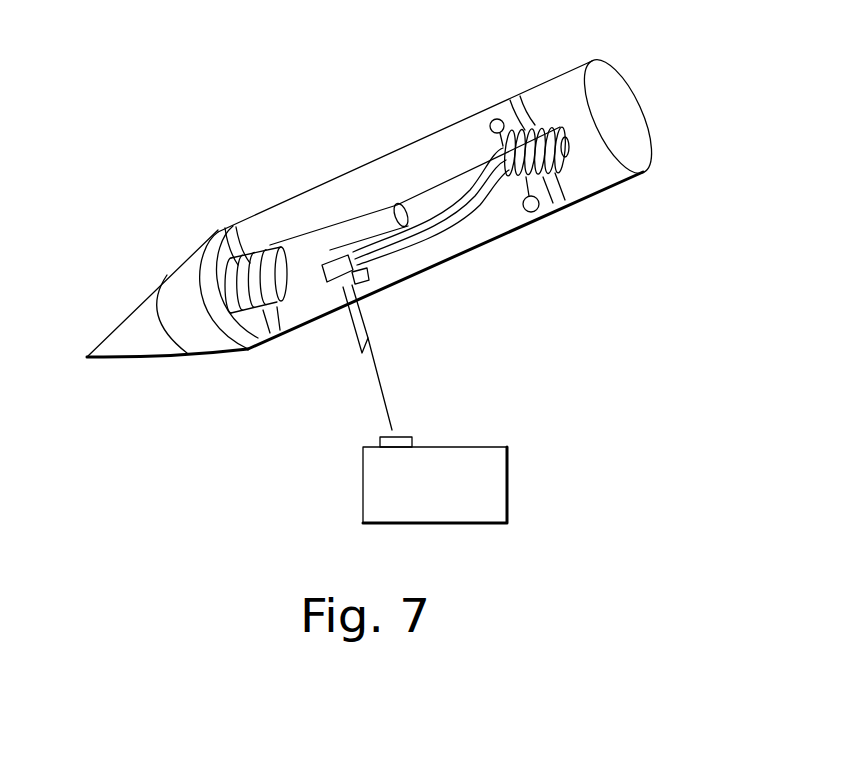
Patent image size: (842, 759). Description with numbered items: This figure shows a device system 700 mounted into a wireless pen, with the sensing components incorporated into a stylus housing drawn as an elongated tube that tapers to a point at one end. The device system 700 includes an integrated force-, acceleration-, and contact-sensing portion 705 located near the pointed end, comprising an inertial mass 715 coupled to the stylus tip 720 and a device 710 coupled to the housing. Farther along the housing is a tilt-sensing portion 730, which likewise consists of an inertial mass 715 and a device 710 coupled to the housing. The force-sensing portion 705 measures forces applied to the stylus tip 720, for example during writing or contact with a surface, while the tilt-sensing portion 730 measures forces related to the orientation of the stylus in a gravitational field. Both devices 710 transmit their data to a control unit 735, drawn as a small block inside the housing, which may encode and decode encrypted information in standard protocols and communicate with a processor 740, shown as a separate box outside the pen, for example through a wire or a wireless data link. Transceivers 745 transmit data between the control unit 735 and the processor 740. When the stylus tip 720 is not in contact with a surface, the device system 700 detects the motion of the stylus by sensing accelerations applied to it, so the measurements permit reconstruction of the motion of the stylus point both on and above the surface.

The device system 700 is at (148, 138).
The integrated force-, acceleration-, and contact-sensing portion 705 is at (225, 225).
The device 710 is at (560, 125).
The inertial mass 715 is at (177, 277).
The stylus tip 720 is at (130, 325).
The tilt-sensing portion 730 is at (517, 197).
The control unit 735 is at (336, 292).
The processor 740 is at (456, 497).
The transceivers 745 is at (366, 300).